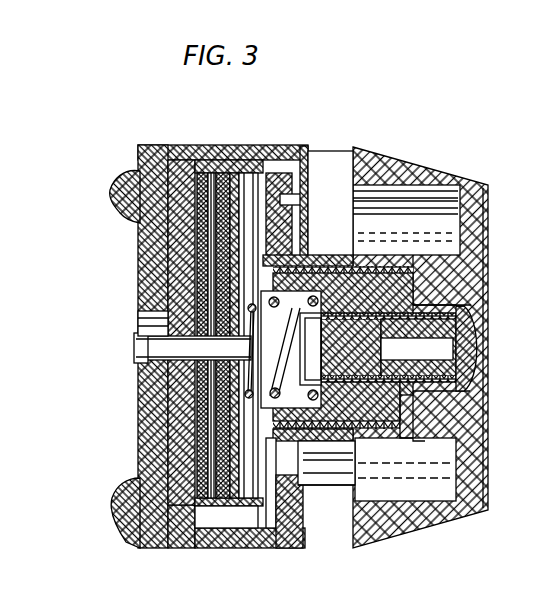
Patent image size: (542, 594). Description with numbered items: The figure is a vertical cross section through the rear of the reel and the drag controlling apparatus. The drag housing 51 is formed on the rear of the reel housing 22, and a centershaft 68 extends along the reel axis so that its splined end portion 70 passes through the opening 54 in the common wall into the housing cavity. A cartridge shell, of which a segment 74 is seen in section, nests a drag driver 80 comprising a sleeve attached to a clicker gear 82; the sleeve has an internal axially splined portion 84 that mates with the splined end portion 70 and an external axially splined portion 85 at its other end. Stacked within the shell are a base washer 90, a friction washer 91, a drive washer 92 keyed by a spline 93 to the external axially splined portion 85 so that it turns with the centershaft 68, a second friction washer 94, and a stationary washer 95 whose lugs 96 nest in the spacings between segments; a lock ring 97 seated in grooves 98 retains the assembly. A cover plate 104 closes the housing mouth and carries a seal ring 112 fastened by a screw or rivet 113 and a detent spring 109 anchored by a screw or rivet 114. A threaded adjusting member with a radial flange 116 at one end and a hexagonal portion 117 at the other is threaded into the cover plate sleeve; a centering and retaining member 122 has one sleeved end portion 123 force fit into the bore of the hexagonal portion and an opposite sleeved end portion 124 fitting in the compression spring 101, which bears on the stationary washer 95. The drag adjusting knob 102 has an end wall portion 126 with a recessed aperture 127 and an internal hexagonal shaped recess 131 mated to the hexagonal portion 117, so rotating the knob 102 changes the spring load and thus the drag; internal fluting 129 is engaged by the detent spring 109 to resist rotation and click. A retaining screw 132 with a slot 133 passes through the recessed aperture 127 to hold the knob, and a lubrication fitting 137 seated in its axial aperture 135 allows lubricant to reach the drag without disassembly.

The reel housing 22 is at (108, 200).
The drag housing 51 is at (162, 534).
The opening 54 is at (130, 318).
The centershaft 68 is at (130, 348).
The splined end portion 70 is at (170, 372).
The segment 74 is at (150, 178).
The drag driver 80 is at (165, 290).
The clicker gear 82 is at (165, 392).
The internal axially splined portion 84 is at (130, 340).
The external axially splined portion 85 is at (185, 272).
The base washer 90 is at (190, 137).
The friction washer 91 is at (196, 152).
The drive washer 92 is at (205, 152).
The spline 93 is at (236, 340).
The second friction washer 94 is at (221, 152).
The stationary washer 95 is at (284, 222).
The lugs 96 is at (250, 158).
The lock ring 97 is at (276, 246).
The grooves 98 is at (298, 159).
The compression spring 101 is at (372, 422).
The drag adjusting knob 102 is at (455, 420).
The cover plate 104 is at (265, 535).
The detent spring 109 is at (300, 470).
The seal ring 112 is at (300, 150).
The screw or rivet 113 is at (296, 192).
The screw or rivet 114 is at (297, 478).
The radial flange 116 is at (215, 522).
The hexagonal portion 117 is at (395, 265).
The centering and retaining member 122 is at (312, 330).
The sleeved end portion 123 is at (316, 360).
The sleeved end portion 124 is at (319, 349).
The end wall portion 126 is at (476, 398).
The recessed aperture 127 is at (450, 385).
The fluting 129 is at (400, 207).
The hexagonal shaped recess 131 is at (412, 296).
The retaining screw 132 is at (456, 304).
The slot 133 is at (458, 362).
The aperture 135 is at (410, 353).
The lubrication fitting 137 is at (460, 342).